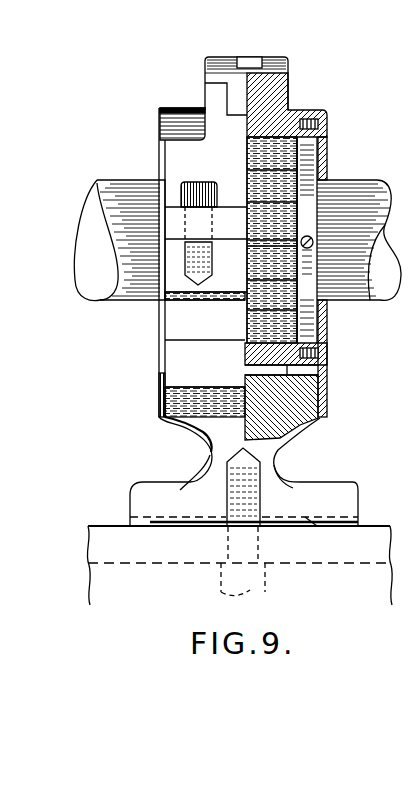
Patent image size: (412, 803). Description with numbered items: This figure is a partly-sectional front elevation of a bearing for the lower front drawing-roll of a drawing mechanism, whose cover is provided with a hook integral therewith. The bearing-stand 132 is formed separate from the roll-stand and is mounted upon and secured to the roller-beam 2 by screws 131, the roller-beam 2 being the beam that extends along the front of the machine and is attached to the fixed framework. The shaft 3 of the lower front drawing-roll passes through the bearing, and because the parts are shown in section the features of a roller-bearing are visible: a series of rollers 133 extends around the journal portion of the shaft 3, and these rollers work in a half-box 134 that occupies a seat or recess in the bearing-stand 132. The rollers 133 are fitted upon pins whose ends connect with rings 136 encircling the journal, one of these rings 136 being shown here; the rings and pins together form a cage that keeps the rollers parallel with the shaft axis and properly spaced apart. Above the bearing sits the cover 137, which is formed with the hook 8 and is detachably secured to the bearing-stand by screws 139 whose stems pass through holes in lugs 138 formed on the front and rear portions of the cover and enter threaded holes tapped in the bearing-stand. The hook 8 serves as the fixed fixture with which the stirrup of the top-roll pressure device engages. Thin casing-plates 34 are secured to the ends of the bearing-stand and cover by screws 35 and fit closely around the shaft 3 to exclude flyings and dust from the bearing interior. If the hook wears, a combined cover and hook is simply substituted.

The roller-beam 2 is at (88, 542).
The shaft of the lower front drawing-roll 3 is at (100, 206).
The hook 8 is at (205, 82).
The casing-plates 34 is at (160, 112).
The screws 35 is at (328, 123).
The screws 131 is at (243, 592).
The bearing-stand 132 is at (228, 437).
The rollers 133 is at (255, 188).
The half-box 134 is at (158, 358).
The rings 136 is at (308, 198).
The cover 137 is at (199, 110).
The lugs 138 is at (160, 188).
The screws 139 is at (227, 223).